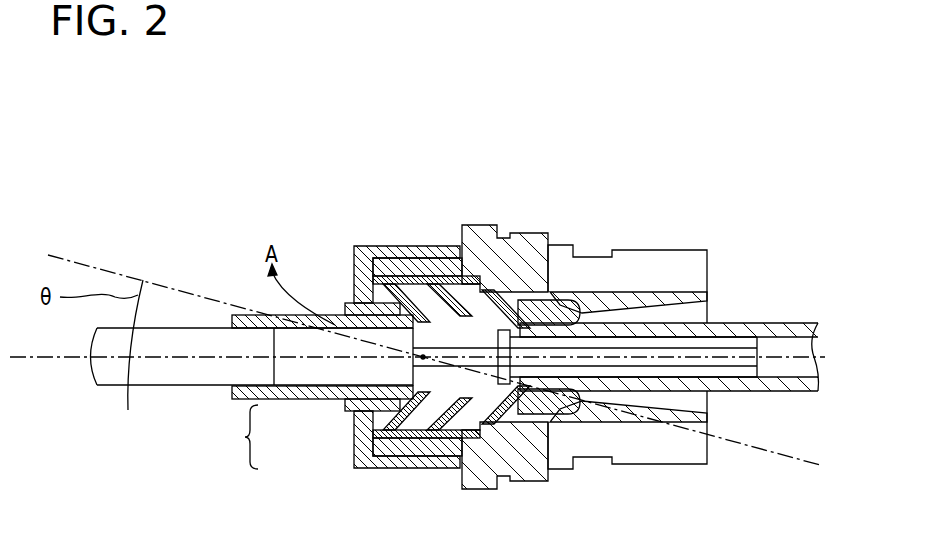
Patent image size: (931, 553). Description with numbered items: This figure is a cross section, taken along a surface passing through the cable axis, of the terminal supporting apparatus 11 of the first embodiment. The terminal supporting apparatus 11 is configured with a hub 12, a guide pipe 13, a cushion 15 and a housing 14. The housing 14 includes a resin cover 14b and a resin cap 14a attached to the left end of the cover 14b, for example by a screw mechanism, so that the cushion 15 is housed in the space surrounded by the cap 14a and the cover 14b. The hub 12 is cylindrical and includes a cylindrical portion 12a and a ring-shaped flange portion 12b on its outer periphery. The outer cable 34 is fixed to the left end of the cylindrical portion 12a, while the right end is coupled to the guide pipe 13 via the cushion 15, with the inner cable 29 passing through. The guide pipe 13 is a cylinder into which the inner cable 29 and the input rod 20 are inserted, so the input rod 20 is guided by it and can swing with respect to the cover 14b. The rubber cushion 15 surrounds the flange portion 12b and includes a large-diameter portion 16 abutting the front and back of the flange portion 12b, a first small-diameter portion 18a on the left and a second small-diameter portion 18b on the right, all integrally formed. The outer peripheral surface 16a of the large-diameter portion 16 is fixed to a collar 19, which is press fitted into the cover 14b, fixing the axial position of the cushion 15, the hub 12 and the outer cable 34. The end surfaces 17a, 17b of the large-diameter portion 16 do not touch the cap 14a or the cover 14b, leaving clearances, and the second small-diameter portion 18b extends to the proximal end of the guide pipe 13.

The terminal supporting apparatus 11 is at (662, 192).
The hub 12 is at (236, 437).
The cylindrical portion 12a is at (340, 398).
The flange portion 12b is at (354, 438).
The guide pipe 13 is at (762, 330).
The housing 14 is at (495, 163).
The cap 14a is at (432, 260).
The cover 14b is at (478, 258).
The cushion 15 is at (499, 480).
The large-diameter portion 16 is at (446, 440).
The outer peripheral surface 16a is at (390, 445).
The end surface 17a is at (372, 262).
The end surface 17b is at (516, 300).
The first small-diameter portion 18a is at (356, 300).
The second small-diameter portion 18b is at (537, 233).
The collar 19 is at (400, 278).
The input rod 20 is at (792, 378).
The inner cable 29 is at (747, 363).
The outer cable 34 is at (133, 375).